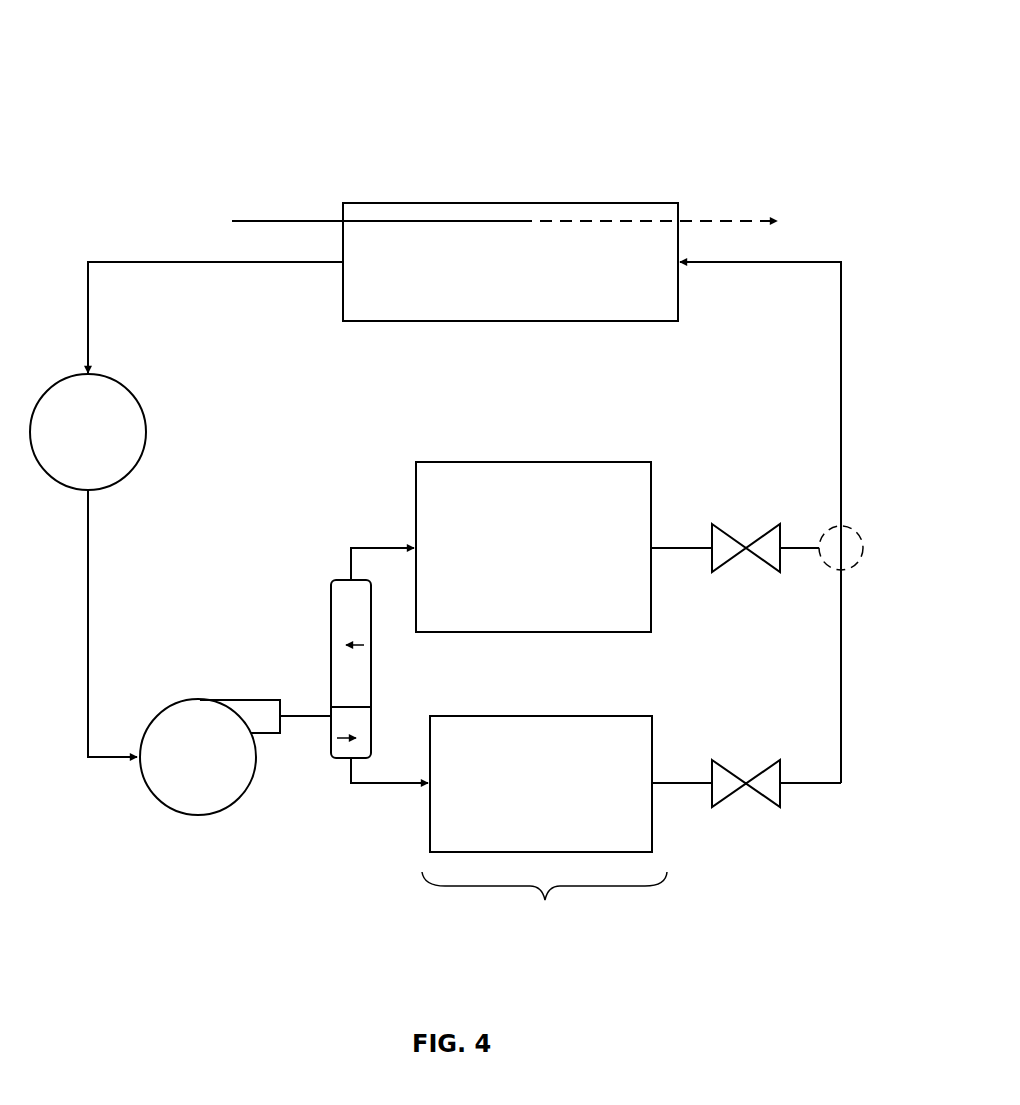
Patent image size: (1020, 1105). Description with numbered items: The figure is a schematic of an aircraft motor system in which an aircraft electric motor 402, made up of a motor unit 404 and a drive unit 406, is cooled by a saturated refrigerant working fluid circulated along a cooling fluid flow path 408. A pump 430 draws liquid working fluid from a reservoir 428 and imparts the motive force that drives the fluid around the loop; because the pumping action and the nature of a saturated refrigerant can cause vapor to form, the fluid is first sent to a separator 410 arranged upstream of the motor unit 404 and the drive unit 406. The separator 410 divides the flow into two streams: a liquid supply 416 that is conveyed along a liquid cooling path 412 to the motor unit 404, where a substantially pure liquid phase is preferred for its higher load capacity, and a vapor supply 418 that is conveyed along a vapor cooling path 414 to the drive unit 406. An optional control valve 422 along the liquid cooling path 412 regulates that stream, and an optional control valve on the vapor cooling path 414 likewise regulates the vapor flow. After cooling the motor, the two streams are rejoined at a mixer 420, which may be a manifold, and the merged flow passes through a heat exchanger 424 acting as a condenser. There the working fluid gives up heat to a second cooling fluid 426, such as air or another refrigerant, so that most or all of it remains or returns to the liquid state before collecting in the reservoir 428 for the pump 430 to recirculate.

The aircraft electric motor 402 is at (544, 904).
The motor unit 404 is at (563, 795).
The drive unit 406 is at (555, 561).
The cooling fluid flow path 408 is at (843, 363).
The separator 410 is at (330, 622).
The liquid cooling path 412 is at (388, 785).
The vapor cooling path 414 is at (372, 547).
The liquid supply 416 is at (332, 738).
The vapor supply 418 is at (365, 648).
The mixer 420 is at (728, 770).
The control valve 422 is at (728, 535).
The heat exchanger 424 is at (532, 275).
The cooling fluid 426 is at (268, 215).
The reservoir 428 is at (110, 445).
The pump 430 is at (220, 770).